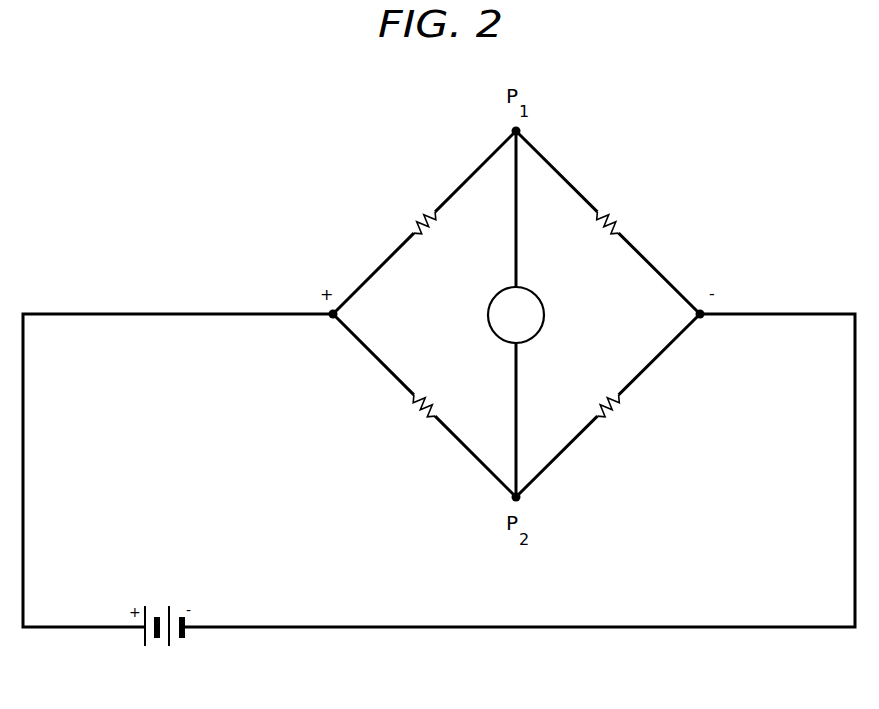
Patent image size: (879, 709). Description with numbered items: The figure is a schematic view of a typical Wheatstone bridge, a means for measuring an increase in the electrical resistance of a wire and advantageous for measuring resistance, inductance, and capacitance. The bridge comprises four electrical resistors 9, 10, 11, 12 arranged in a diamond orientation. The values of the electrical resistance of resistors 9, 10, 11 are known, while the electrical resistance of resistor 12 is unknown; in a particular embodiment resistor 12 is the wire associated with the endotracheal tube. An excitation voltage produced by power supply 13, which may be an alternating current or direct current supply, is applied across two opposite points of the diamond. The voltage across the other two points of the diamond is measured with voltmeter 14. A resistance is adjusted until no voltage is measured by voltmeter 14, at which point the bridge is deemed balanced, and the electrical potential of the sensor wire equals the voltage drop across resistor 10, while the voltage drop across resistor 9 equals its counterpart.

The electrical resistor 9 is at (413, 217).
The electrical resistor 10 is at (617, 217).
The electrical resistor 11 is at (420, 417).
The electrical resistor 12 is at (610, 419).
The power supply 13 is at (160, 646).
The voltmeter 14 is at (545, 318).